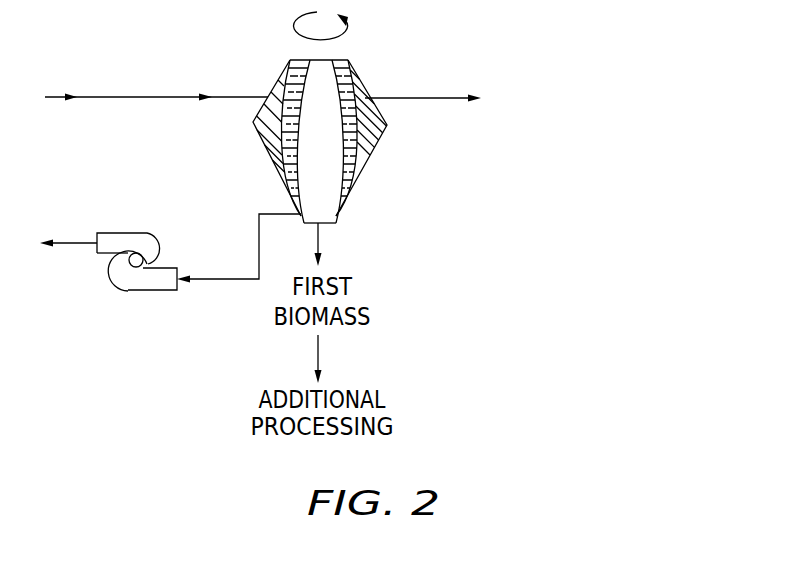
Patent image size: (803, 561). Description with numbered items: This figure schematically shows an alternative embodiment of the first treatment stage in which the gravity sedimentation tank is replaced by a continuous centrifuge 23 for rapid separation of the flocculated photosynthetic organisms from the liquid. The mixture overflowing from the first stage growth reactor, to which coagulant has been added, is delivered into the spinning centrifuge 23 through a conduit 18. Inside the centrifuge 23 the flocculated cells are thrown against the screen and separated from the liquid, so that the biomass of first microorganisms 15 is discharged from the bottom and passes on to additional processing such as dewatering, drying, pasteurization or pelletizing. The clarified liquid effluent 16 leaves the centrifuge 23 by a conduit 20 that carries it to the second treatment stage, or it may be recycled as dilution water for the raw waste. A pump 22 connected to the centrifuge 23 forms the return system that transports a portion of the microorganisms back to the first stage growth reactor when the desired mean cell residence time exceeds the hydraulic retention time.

The biomass of first microorganisms 15 is at (267, 107).
The liquid effluent 16 is at (290, 73).
The conduit 18 is at (120, 97).
The conduit 20 is at (432, 98).
The pump 22 is at (127, 281).
The continuous centrifuge 23 is at (265, 153).